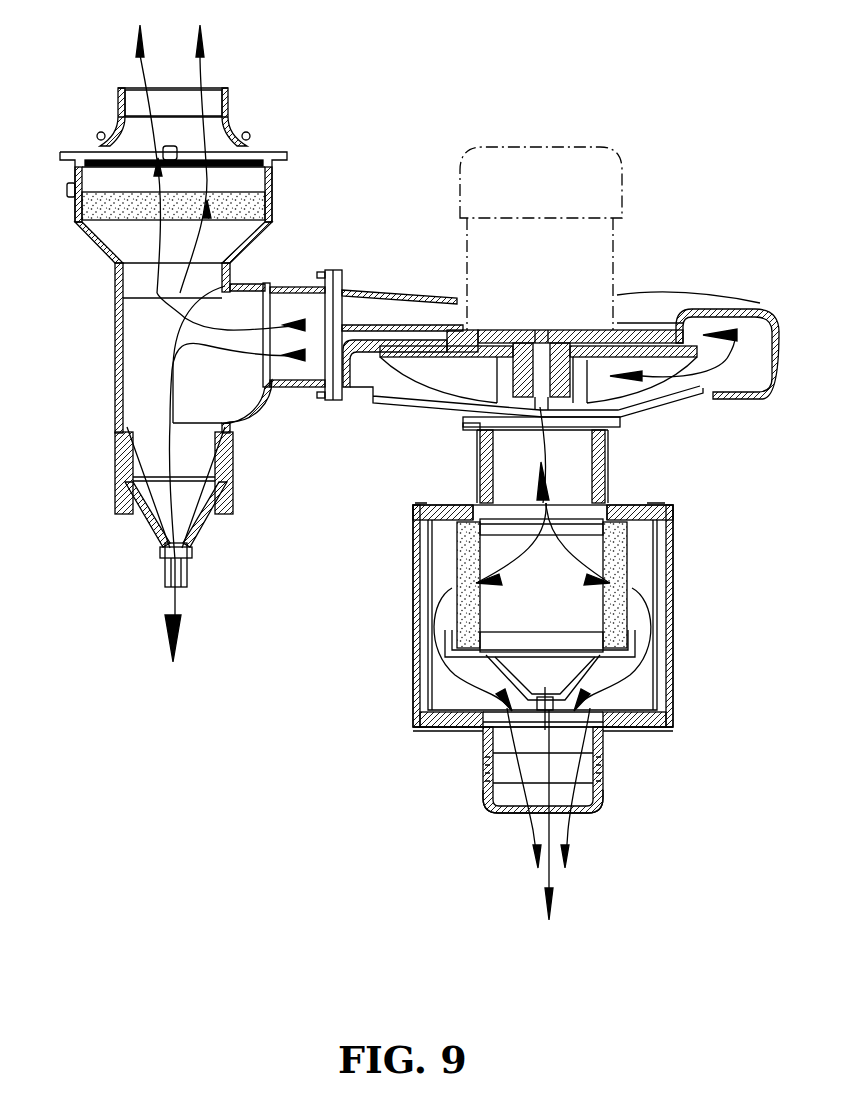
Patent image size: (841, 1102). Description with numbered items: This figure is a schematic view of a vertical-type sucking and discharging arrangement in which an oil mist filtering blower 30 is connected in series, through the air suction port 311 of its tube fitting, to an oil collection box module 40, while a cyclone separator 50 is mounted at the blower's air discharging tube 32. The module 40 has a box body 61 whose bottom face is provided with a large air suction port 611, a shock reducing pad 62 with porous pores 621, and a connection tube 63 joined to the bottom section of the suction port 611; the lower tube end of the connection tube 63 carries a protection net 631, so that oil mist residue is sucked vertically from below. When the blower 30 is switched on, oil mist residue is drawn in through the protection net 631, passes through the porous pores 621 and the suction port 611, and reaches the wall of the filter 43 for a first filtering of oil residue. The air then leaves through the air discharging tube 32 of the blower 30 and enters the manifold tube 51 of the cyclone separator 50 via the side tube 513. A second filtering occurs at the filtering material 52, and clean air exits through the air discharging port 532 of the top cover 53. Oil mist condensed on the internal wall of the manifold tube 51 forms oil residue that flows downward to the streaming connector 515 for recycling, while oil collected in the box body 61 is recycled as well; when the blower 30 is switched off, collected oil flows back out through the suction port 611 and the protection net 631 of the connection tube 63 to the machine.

The oil mist filtering blower 30 is at (561, 325).
The air suction port 311 is at (573, 457).
The air discharging tube 32 is at (363, 300).
The oil collection box module 40 is at (531, 711).
The filter 43 is at (620, 563).
The cyclone separator 50 is at (217, 337).
The manifold tube 51 is at (153, 440).
The side tube 513 is at (290, 383).
The streaming connector 515 is at (165, 572).
The filtering material 52 is at (78, 208).
The top cover 53 is at (113, 130).
The air discharging port 532 is at (207, 93).
The box body 61 is at (412, 675).
The air suction port 611 is at (477, 727).
The shock reducing pad 62 is at (670, 725).
The porous pores 621 is at (510, 817).
The connection tube 63 is at (603, 760).
The protection net 631 is at (580, 817).